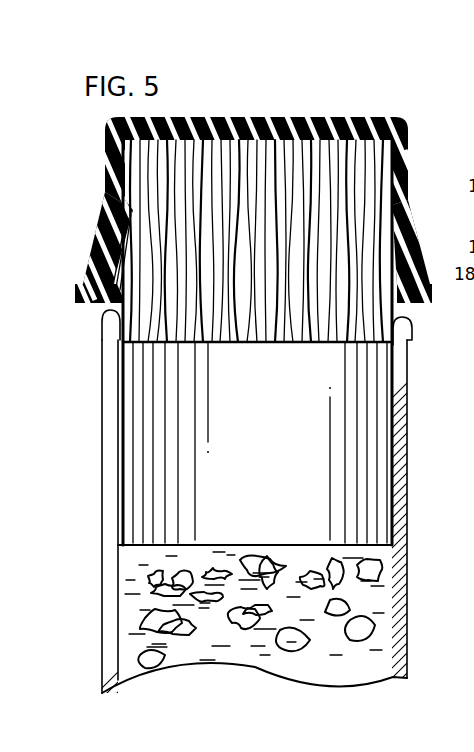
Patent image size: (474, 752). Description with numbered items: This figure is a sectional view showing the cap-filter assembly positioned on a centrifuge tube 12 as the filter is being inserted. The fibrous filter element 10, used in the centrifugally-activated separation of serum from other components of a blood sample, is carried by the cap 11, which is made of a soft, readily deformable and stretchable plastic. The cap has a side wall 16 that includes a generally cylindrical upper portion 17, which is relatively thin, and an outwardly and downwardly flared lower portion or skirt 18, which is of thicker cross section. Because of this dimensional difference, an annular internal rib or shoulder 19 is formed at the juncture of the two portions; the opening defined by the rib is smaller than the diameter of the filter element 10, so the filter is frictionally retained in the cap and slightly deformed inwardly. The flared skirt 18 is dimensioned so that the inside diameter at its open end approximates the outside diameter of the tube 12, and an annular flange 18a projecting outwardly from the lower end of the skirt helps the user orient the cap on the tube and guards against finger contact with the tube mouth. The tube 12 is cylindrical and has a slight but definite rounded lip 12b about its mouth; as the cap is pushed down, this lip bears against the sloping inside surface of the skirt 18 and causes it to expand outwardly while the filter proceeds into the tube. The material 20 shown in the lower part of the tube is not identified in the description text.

The fibrous filter element 10 is at (356, 190).
The cap 11 is at (235, 193).
The centrifuge tube 12 is at (103, 472).
The lip 12b is at (412, 328).
The side wall 16 is at (110, 183).
The upper cylindrical portion 17 is at (283, 118).
The skirt 18 is at (97, 240).
The annular flange 18a is at (78, 283).
The annular internal rib or shoulder 19 is at (141, 209).
The contents 20 is at (383, 592).